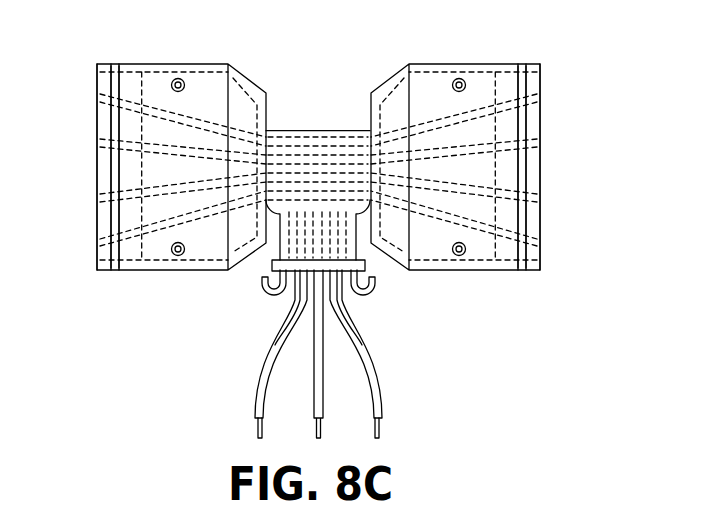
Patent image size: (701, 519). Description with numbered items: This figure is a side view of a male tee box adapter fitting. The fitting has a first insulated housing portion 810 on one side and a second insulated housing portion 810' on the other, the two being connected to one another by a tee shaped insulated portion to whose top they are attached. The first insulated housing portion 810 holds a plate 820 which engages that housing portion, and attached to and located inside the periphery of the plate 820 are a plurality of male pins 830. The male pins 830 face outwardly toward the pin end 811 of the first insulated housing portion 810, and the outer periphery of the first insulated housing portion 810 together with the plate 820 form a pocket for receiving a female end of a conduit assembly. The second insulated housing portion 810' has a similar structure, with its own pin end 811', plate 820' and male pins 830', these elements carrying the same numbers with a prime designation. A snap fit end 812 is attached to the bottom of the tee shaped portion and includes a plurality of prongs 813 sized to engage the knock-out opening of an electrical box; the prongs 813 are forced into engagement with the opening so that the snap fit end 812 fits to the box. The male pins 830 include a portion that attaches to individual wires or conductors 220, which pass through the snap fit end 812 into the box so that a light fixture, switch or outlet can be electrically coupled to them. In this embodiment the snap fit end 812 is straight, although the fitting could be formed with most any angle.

The first insulated housing portion 810 is at (181, 196).
The pin end 811 is at (85, 167).
The plate 820 is at (86, 190).
The male pins 830 is at (78, 167).
The second insulated housing portion 810' is at (455, 193).
The pin end 811' is at (556, 167).
The plate 820' is at (552, 188).
The male pins 830' is at (556, 167).
The snap fit end 812 is at (272, 276).
The prongs 813 is at (277, 296).
The individual wires or conductors 220 is at (380, 392).